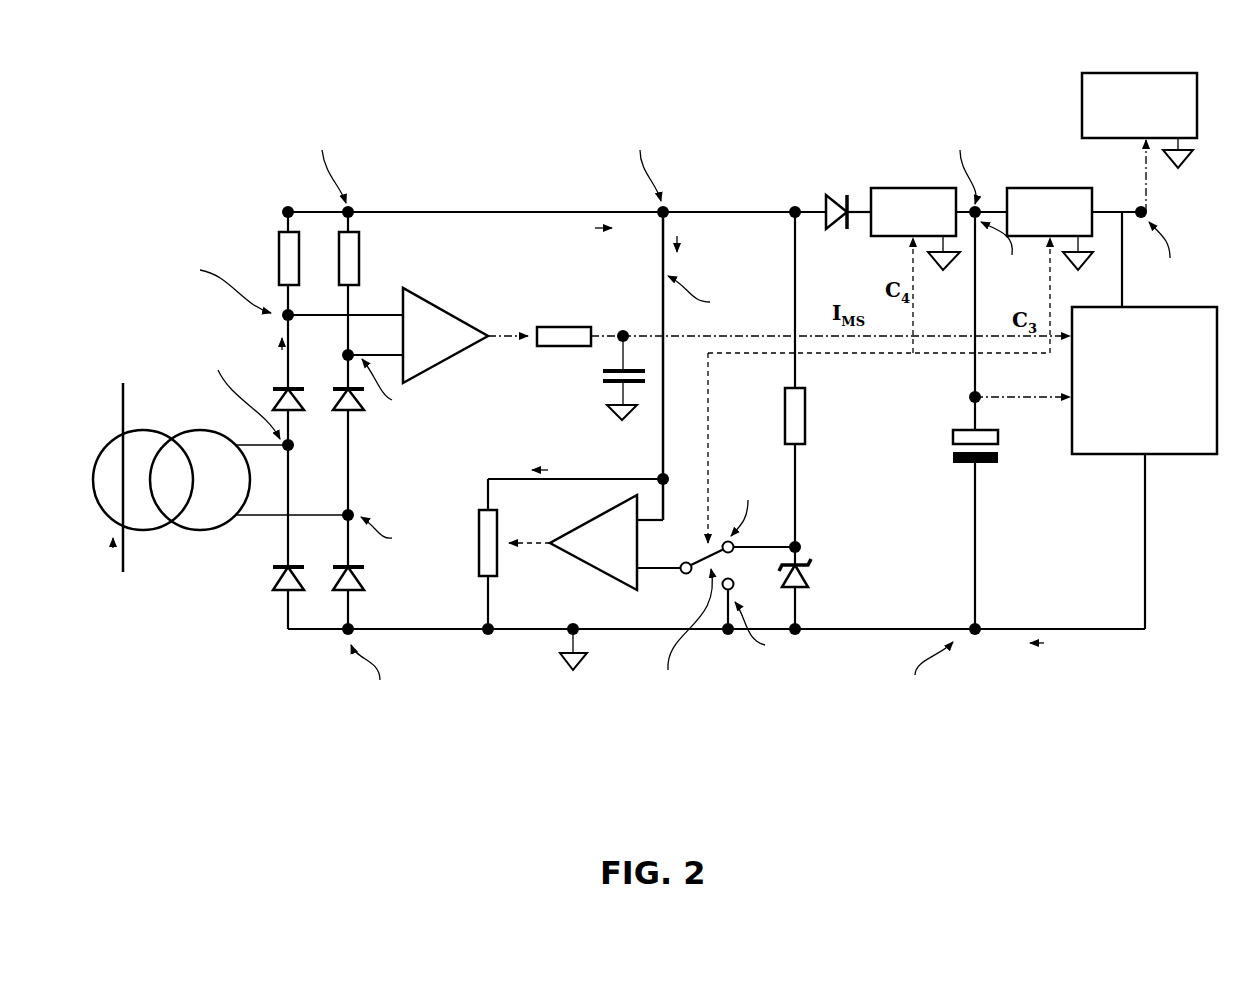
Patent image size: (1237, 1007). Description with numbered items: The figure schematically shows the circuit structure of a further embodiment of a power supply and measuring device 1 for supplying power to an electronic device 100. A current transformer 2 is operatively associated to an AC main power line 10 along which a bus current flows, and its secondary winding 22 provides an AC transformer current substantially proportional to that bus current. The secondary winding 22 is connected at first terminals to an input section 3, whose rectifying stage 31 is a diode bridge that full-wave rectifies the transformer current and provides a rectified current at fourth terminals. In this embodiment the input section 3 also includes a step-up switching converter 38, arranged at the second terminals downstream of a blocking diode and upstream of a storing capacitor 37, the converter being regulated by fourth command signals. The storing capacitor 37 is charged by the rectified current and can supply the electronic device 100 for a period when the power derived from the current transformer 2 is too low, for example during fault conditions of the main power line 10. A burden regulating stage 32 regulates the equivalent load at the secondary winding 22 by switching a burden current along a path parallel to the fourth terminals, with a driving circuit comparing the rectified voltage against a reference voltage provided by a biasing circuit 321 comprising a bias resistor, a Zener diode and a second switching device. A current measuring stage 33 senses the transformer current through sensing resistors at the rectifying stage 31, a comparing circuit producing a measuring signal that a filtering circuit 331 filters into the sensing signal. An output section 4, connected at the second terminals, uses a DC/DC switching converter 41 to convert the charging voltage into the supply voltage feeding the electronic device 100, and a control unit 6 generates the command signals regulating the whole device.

The power supply and measuring device 1 is at (889, 723).
The current transformer 2 is at (220, 473).
The input section 3 is at (679, 299).
The output section 4 is at (1005, 194).
The control unit 6 is at (1117, 492).
The AC main power line 10 is at (123, 379).
The secondary winding 22 is at (198, 543).
The rectifying stage 31 is at (300, 658).
The burden regulating stage 32 is at (531, 608).
The current measuring stage 33 is at (679, 276).
The storing capacitor 37 is at (990, 470).
The step-up switching converter 38 is at (915, 243).
The DC/DC switching converter 41 is at (1061, 243).
The electronic device 100 is at (1149, 132).
The biasing circuit 321 is at (846, 514).
The filtering circuit 331 is at (539, 371).